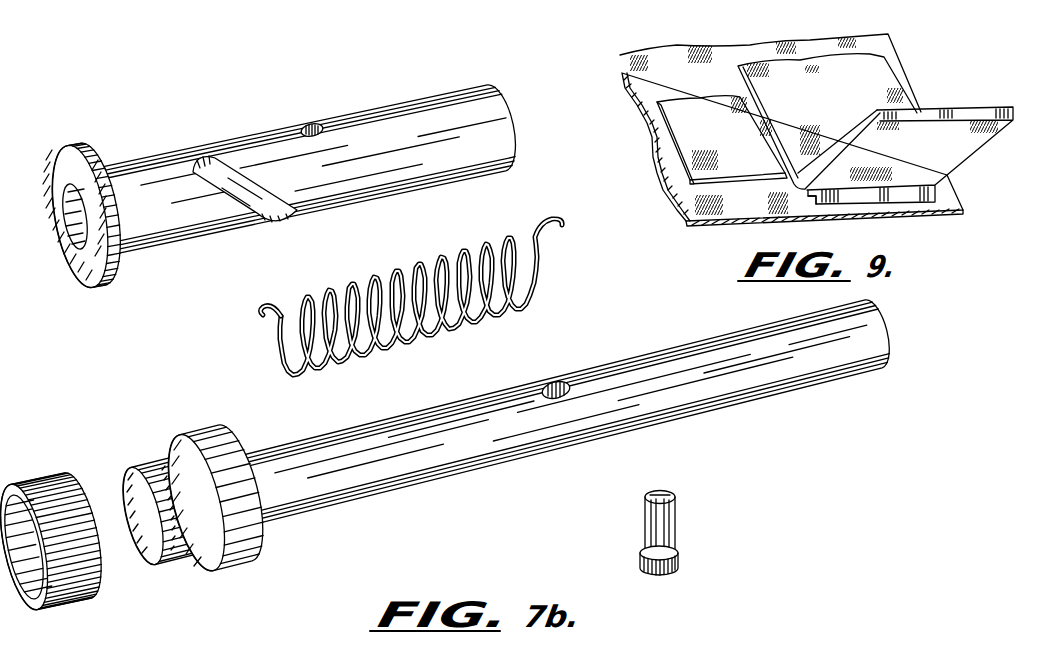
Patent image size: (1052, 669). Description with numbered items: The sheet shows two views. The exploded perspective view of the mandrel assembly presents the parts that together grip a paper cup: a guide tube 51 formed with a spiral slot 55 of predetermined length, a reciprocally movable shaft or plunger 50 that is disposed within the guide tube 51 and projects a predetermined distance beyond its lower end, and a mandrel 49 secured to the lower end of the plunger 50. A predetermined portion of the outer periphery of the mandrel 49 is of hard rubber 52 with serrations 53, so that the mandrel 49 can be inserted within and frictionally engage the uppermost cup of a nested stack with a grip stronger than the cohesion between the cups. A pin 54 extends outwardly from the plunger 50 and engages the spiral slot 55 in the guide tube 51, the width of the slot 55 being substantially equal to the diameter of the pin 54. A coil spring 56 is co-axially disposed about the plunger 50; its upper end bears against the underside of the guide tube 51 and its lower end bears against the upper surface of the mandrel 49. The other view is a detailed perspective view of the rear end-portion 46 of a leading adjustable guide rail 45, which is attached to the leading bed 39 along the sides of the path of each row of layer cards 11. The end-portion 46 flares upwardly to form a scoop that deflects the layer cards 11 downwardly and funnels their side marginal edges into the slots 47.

In FIG. 9, the layer cards 11 is at (728, 143).
In FIG. 9, the leading bed 39 is at (873, 45).
In FIG. 9, the leading adjustable guide rail 45 is at (883, 78).
In FIG. 9, the rear end-portion 46 is at (963, 153).
In FIG. 9, the slots 47 is at (815, 211).
In FIG. 7b, the mandrel 49 is at (240, 550).
In FIG. 7b, the plunger 50 is at (695, 362).
In FIG. 7b, the guide tube 51 is at (279, 188).
In FIG. 7b, the hard rubber 52 is at (68, 563).
In FIG. 7b, the serrations 53 is at (102, 553).
In FIG. 7b, the pin 54 is at (662, 530).
In FIG. 7b, the spiral slot 55 is at (280, 218).
In FIG. 7b, the coil spring 56 is at (565, 272).